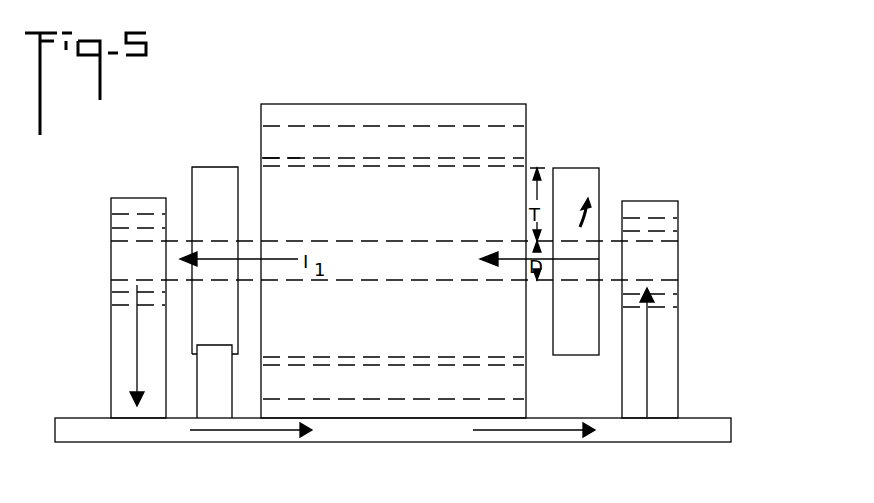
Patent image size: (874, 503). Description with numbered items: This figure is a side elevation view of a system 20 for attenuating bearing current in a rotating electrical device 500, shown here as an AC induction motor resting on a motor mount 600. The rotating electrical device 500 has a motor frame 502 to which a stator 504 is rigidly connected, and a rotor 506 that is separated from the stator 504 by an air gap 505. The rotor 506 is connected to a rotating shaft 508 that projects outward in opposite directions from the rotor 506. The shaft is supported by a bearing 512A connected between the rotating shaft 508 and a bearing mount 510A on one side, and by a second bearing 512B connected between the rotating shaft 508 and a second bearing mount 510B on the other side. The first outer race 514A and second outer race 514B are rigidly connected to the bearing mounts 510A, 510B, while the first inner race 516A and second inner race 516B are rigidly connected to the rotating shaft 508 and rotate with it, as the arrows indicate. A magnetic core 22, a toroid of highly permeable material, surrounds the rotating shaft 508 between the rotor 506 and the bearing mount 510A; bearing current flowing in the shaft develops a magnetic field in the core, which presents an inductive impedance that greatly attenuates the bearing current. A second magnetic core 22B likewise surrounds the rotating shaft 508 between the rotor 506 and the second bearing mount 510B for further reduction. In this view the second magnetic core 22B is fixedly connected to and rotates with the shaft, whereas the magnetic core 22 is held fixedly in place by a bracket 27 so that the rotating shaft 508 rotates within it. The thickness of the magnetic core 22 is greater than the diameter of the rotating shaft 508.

The system for attenuating bearing current 20 is at (535, 81).
The magnetic core 22 is at (207, 168).
The second magnetic core 22B is at (583, 190).
The bracket 27 is at (215, 395).
The rotating electrical device 500 is at (487, 101).
The motor frame 502 is at (378, 110).
The stator 504 is at (320, 143).
The air gap 505 is at (268, 165).
The rotor 506 is at (420, 190).
The rotating shaft 508 is at (181, 243).
The bearing mount 510A is at (111, 348).
The second bearing mount 510B is at (678, 358).
The bearing 512A is at (128, 292).
The second bearing 512B is at (672, 292).
The first outer race 514A is at (118, 221).
The second outer race 514B is at (672, 222).
The first inner race 516A is at (118, 238).
The second inner race 516B is at (672, 237).
The motor mount 600 is at (715, 427).